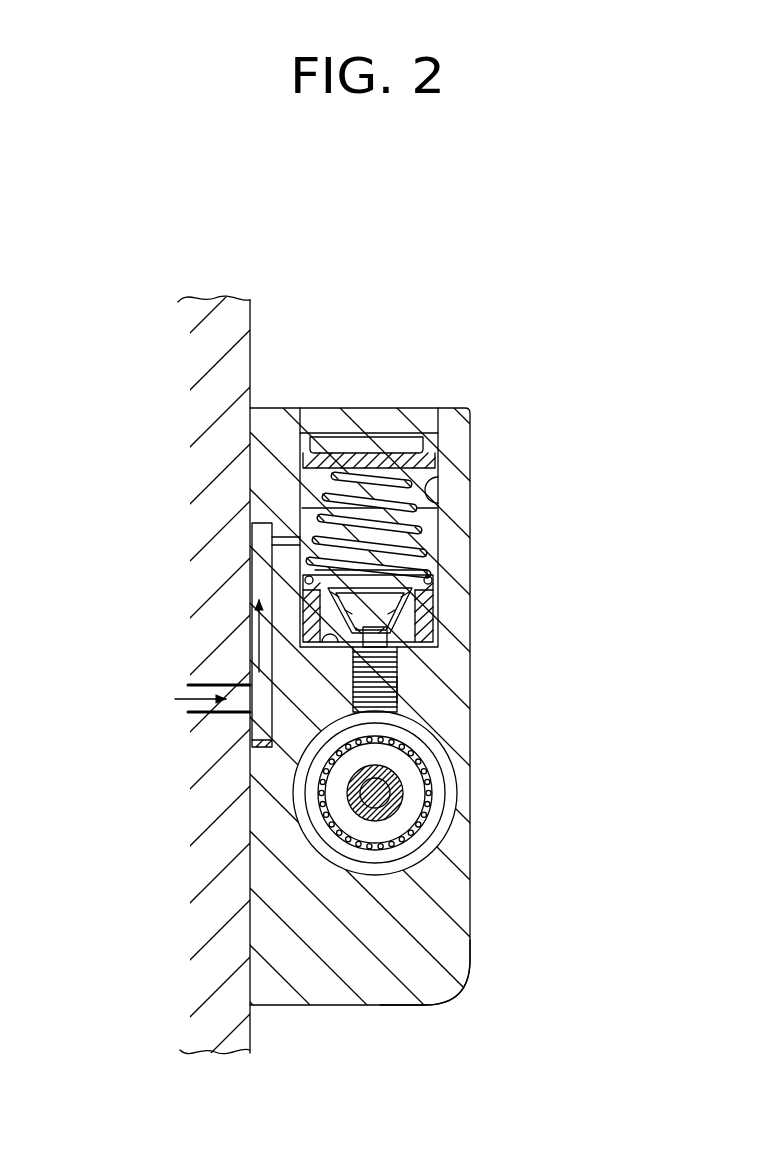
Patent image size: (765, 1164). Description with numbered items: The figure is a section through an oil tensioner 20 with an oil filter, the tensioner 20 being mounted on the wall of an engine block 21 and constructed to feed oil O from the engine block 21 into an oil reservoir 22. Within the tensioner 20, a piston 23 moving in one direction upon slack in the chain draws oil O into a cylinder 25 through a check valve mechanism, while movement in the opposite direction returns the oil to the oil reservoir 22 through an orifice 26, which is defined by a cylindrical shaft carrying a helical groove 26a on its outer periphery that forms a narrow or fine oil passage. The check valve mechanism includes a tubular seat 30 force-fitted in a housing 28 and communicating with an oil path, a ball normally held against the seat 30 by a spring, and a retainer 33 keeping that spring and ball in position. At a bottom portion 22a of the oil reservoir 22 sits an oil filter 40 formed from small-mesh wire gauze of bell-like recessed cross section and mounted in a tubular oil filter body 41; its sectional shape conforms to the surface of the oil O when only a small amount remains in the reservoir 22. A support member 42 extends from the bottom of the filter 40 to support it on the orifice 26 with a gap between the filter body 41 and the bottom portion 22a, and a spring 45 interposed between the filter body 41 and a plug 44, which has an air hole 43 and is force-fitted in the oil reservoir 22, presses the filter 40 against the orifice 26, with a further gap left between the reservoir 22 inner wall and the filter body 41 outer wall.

The oil tensioner 20 is at (478, 401).
The engine block 21 is at (209, 288).
The oil reservoir 22 is at (440, 497).
The bottom portion of oil reservoir 22a is at (290, 662).
The piston 23 is at (455, 787).
The cylinder 25 is at (382, 809).
The orifice 26 is at (397, 703).
The helical groove 26a is at (397, 678).
The housing 28 is at (478, 970).
The tubular seat 30 is at (383, 822).
The retainer 33 is at (400, 815).
The oil filter 40 is at (440, 620).
The oil filter body 41 is at (440, 593).
The support member 42 is at (397, 660).
The air hole 43 is at (375, 456).
The plug 44 is at (398, 462).
The spring 45 is at (440, 527).
The oil O is at (440, 507).